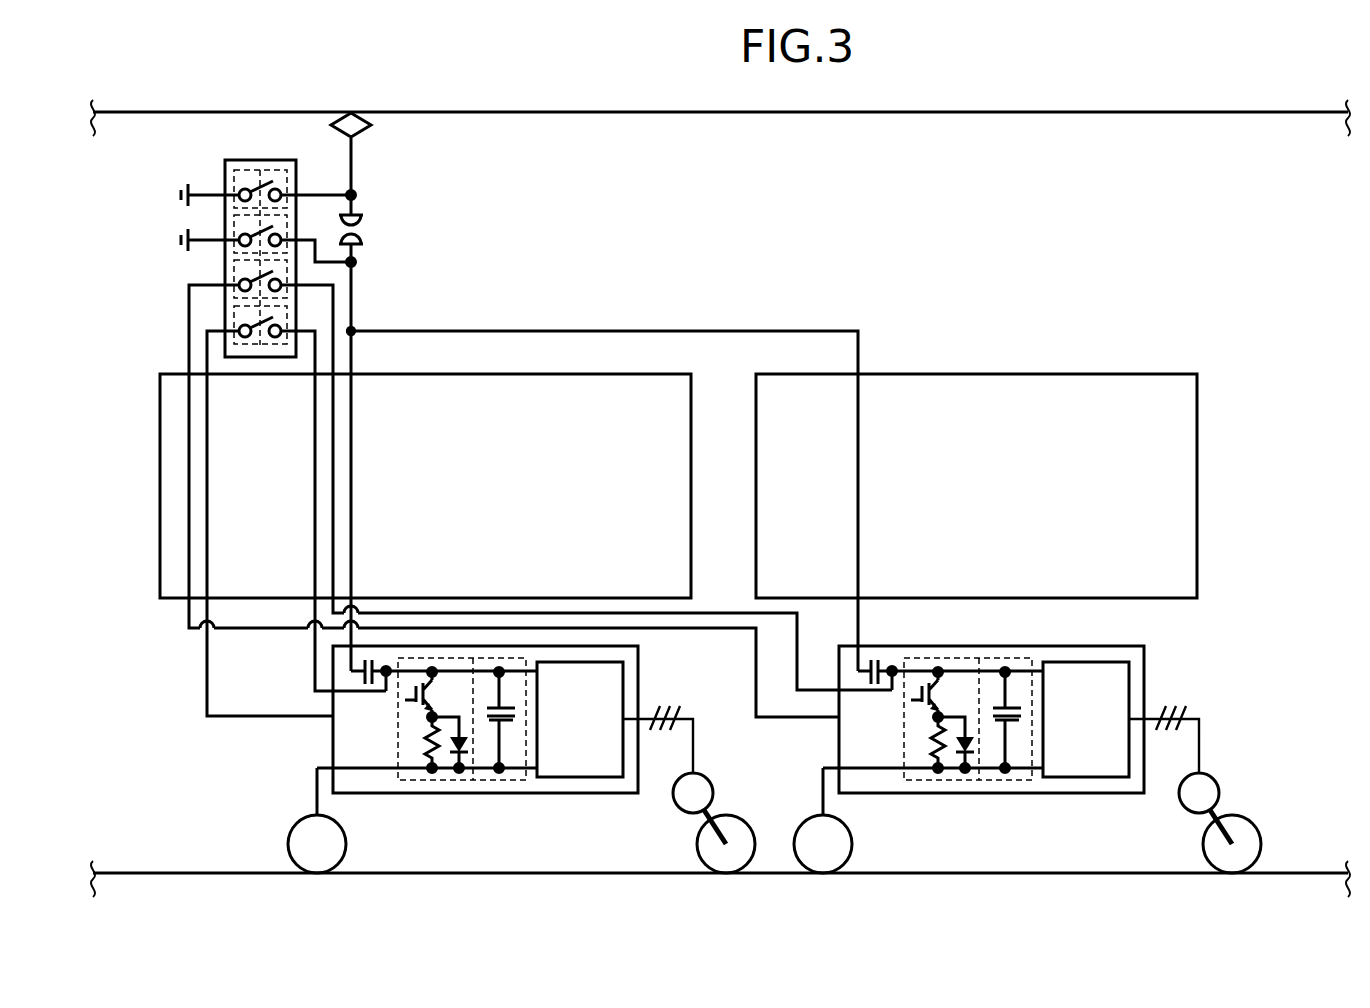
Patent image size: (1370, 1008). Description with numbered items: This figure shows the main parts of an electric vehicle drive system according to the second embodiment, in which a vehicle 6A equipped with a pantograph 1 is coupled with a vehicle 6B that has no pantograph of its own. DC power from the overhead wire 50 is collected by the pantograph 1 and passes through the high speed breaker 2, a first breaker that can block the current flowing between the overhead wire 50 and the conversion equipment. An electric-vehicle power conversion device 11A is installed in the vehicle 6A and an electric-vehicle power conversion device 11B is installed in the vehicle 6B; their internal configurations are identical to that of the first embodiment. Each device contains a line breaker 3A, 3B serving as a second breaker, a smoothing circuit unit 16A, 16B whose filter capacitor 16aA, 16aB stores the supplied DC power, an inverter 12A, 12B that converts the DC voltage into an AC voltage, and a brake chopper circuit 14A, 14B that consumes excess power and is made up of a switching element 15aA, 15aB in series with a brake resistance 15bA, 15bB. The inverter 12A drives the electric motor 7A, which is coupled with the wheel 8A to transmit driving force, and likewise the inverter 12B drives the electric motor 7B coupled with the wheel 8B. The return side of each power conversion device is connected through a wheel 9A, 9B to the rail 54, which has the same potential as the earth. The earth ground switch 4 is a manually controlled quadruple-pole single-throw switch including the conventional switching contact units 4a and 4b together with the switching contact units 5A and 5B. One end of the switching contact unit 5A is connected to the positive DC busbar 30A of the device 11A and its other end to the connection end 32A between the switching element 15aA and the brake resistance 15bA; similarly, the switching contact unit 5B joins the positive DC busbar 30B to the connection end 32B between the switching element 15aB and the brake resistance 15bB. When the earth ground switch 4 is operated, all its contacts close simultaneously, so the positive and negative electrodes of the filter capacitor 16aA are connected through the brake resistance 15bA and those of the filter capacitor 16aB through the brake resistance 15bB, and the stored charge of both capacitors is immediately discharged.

The pantograph 1 is at (362, 132).
The high speed breaker 2 is at (364, 231).
The earth ground switch 4 is at (245, 160).
The switching contact unit 4a is at (226, 180).
The switching contact unit 4b is at (226, 225).
The switching contact unit 5A is at (226, 319).
The switching contact unit 5B is at (226, 272).
The vehicle 6A is at (620, 374).
The vehicle 6B is at (1127, 374).
The electric motor 7A is at (712, 782).
The electric motor 7B is at (1223, 781).
The wheel 8A is at (697, 846).
The wheel 8B is at (1202, 841).
The wheel 9A is at (288, 846).
The wheel 9B is at (800, 820).
The electric-vehicle power conversion device 11A is at (638, 672).
The electric-vehicle power conversion device 11B is at (1033, 719).
The inverter 12A is at (580, 778).
The inverter 12B is at (1086, 753).
The line breaker 3A is at (364, 677).
The line breaker 3B is at (887, 649).
The brake chopper circuit 14A is at (433, 781).
The brake chopper circuit 14B is at (952, 757).
The switching element 15aA is at (404, 700).
The switching element 15aB is at (854, 717).
The brake resistance 15bA is at (430, 772).
The brake resistance 15bB is at (919, 800).
The smoothing circuit unit 16A is at (501, 781).
The smoothing circuit unit 16B is at (1031, 782).
The filter capacitor 16aA is at (498, 770).
The filter capacitor 16aB is at (993, 773).
The positive DC busbar 30A is at (410, 664).
The positive DC busbar 30B is at (968, 697).
The connection end 32A is at (427, 718).
The connection end 32B is at (993, 691).
The overhead wire 50 is at (1301, 112).
The rail 54 is at (1301, 873).